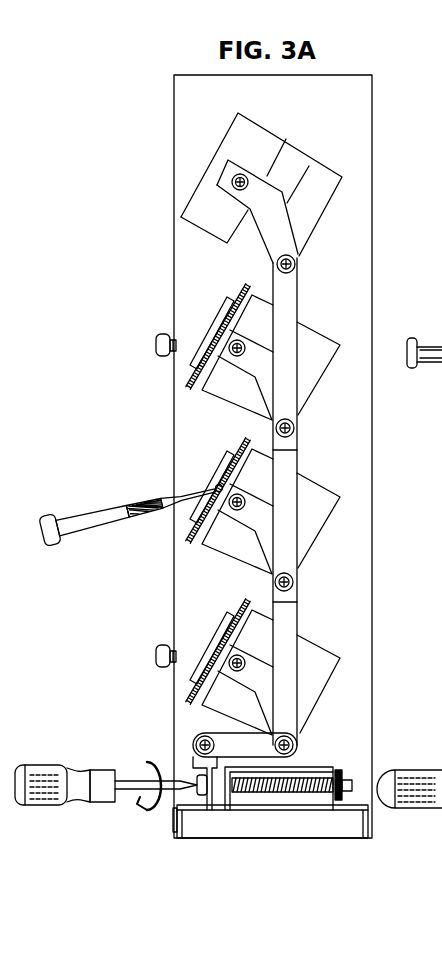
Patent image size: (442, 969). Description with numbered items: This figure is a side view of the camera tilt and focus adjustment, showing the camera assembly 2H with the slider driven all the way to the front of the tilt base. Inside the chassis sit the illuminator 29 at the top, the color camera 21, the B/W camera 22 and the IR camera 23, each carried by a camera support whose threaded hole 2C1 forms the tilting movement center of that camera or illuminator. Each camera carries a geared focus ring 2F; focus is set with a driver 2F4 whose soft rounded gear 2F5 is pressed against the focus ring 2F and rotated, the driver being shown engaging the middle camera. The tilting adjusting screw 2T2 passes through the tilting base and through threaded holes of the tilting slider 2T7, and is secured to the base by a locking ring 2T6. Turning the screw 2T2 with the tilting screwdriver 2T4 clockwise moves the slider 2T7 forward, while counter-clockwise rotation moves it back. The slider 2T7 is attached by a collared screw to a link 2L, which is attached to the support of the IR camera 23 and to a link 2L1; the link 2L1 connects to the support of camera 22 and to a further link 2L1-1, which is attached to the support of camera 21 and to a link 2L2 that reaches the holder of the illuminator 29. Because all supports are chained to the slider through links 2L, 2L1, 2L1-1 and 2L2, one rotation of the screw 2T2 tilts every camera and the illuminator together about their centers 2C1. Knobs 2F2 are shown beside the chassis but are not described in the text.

The camera assembly 2H is at (174, 107).
The illuminator 29 is at (325, 178).
The color camera 21 is at (323, 340).
The B/W camera 22 is at (323, 500).
The IR camera 23 is at (323, 657).
The threaded hole 2C1 is at (238, 340).
The adjustment knob 2F2 is at (158, 348).
The link 2L2 is at (283, 368).
The soft rounded gear 2F5 is at (216, 482).
The driver 2F4 is at (75, 520).
The geared focus ring 2F is at (187, 528).
The link 2L1-1 is at (283, 512).
The link 2L1 is at (285, 622).
The link 2L is at (213, 735).
The locking ring 2T6 is at (345, 773).
The tilting screwdriver 2T4 is at (17, 787).
The tilting slider 2T7 is at (218, 800).
The tilting adjusting screw 2T2 is at (303, 793).